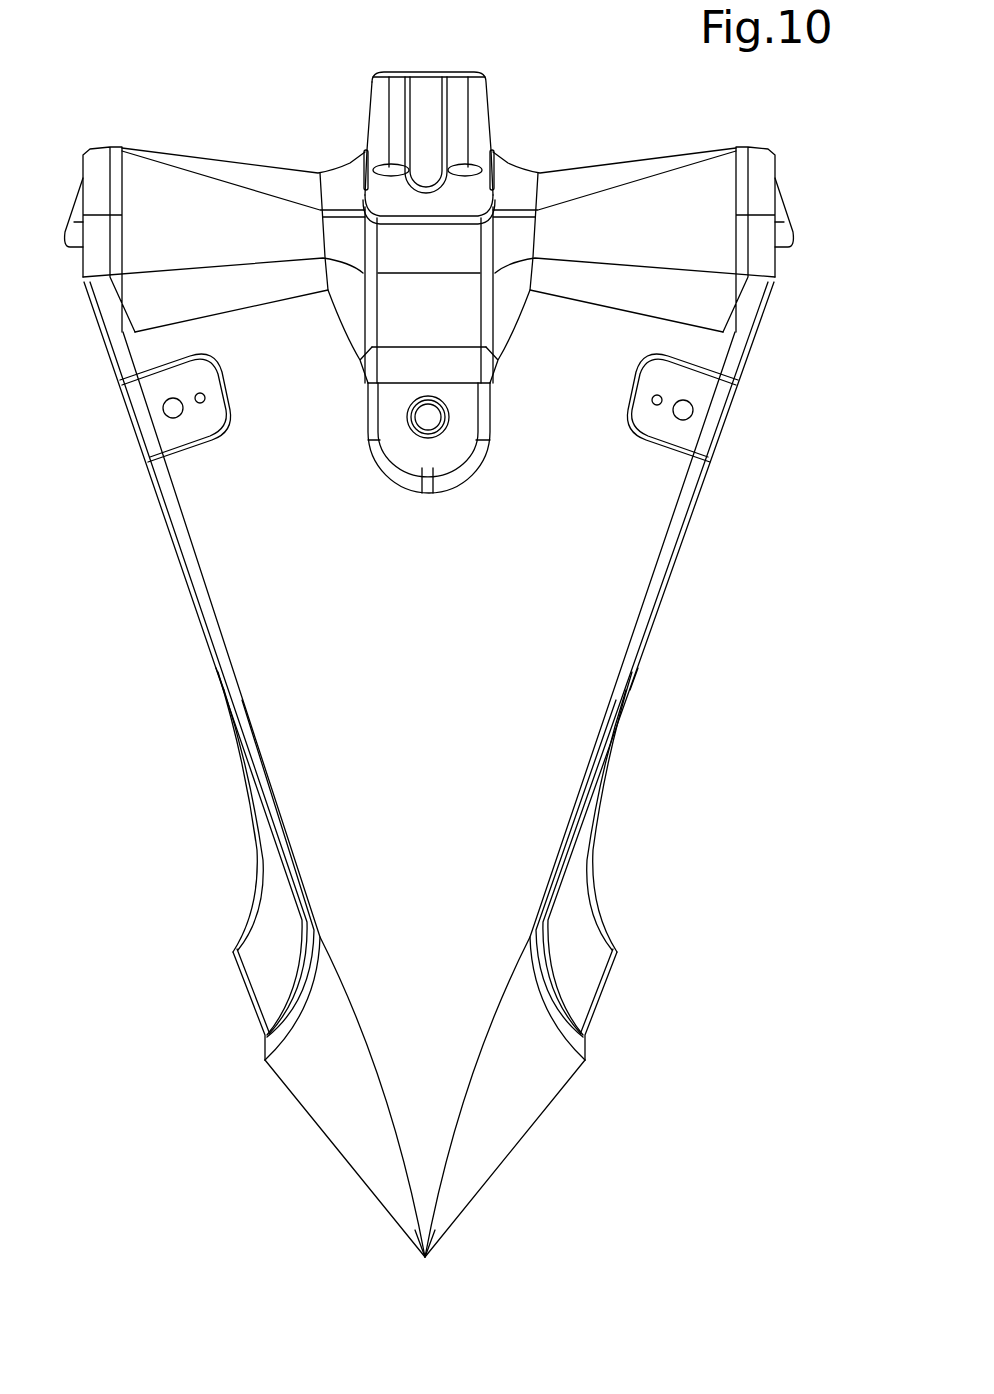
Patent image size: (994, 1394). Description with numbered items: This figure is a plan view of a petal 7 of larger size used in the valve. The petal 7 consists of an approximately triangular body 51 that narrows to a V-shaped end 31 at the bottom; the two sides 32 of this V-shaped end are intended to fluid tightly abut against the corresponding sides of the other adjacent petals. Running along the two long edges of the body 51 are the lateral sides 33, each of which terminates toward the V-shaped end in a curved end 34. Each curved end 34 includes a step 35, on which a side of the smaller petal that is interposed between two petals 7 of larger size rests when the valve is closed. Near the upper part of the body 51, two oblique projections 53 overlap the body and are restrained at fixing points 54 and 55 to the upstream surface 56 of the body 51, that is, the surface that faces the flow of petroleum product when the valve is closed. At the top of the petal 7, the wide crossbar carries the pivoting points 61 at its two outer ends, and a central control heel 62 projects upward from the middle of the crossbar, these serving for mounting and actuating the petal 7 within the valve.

The petal 7 is at (701, 542).
The V-shaped end 31 is at (427, 1222).
The sides 32 is at (333, 1150).
The lateral sides 33 is at (182, 567).
The curved end 34 is at (290, 847).
The step 35 is at (265, 950).
The body 51 is at (428, 660).
The oblique projections 53 is at (190, 430).
The fixing point 54 is at (204, 403).
The fixing point 55 is at (173, 398).
The upstream surface 56 is at (533, 795).
The pivoting points 61 is at (70, 208).
The control heel 62 is at (463, 100).